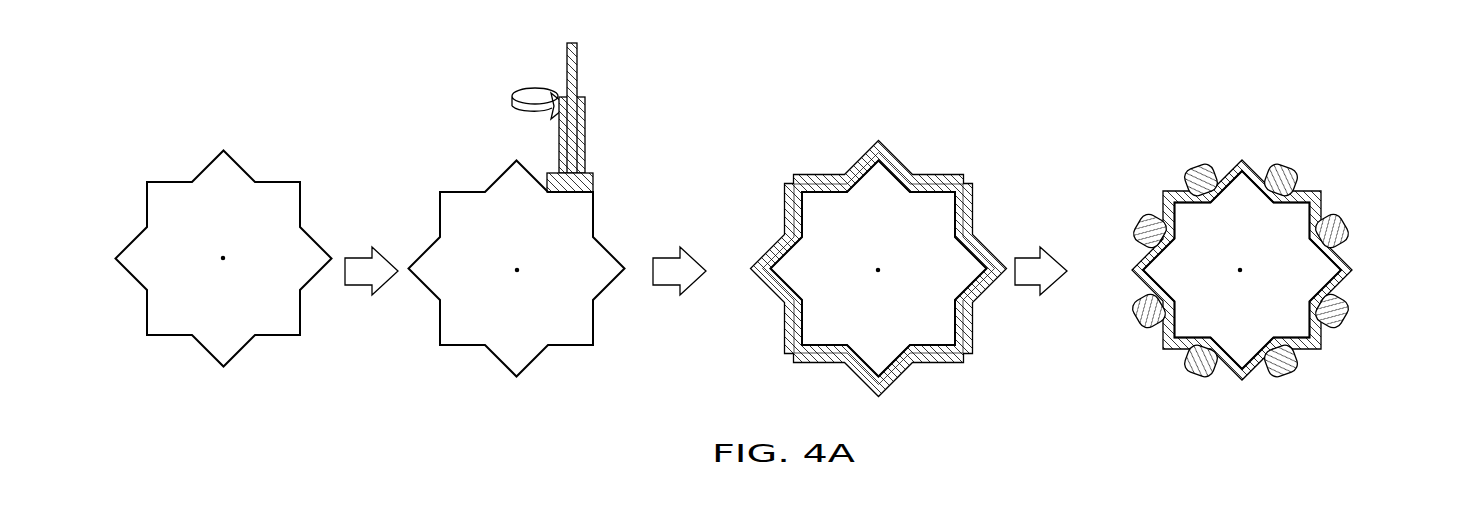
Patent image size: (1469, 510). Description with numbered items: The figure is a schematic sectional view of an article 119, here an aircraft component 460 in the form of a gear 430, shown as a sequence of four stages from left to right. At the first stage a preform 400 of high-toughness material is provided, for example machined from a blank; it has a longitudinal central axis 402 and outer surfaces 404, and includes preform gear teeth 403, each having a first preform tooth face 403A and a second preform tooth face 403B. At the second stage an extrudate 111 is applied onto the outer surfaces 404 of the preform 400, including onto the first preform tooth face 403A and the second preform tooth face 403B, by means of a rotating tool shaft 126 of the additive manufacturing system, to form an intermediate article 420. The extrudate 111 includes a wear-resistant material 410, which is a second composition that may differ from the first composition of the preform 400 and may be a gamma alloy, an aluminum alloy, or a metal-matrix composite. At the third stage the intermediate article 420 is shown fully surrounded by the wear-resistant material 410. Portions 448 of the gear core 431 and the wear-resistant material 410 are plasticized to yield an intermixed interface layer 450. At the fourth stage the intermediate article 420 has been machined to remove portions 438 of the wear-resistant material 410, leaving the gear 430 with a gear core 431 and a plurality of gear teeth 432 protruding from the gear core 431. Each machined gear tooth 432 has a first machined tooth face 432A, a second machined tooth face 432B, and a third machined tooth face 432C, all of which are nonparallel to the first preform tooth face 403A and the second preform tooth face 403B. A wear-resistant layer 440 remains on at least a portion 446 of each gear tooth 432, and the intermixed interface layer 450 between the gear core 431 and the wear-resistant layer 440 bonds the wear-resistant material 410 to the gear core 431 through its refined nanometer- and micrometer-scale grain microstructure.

The preform 400 is at (802, 278).
The longitudinal central axis 402 is at (223, 258).
The outer surfaces 404 is at (167, 182).
The preform gear teeth 403 is at (440, 345).
The first preform tooth face 403A is at (440, 327).
The second preform tooth face 403B is at (458, 345).
The rotating tool shaft 126 is at (577, 70).
The extrudate 111 is at (593, 187).
The wear-resistant material 410 is at (966, 230).
The intermediate article 420 is at (836, 250).
The portions 448 is at (879, 244).
The gear 430 is at (1291, 248).
The portions 438 is at (1185, 129).
The article 119 is at (1260, 113).
The aircraft component 460 is at (1316, 124).
The portion 446 is at (1204, 260).
The gear teeth 432 is at (1155, 257).
The first machined tooth face 432A is at (1212, 370).
The second machined tooth face 432B is at (1287, 368).
The third machined tooth face 432C is at (1240, 378).
The gear core 431 is at (1293, 288).
The wear-resistant layer 440 is at (1167, 345).
The intermixed interface layer 450 is at (1268, 342).